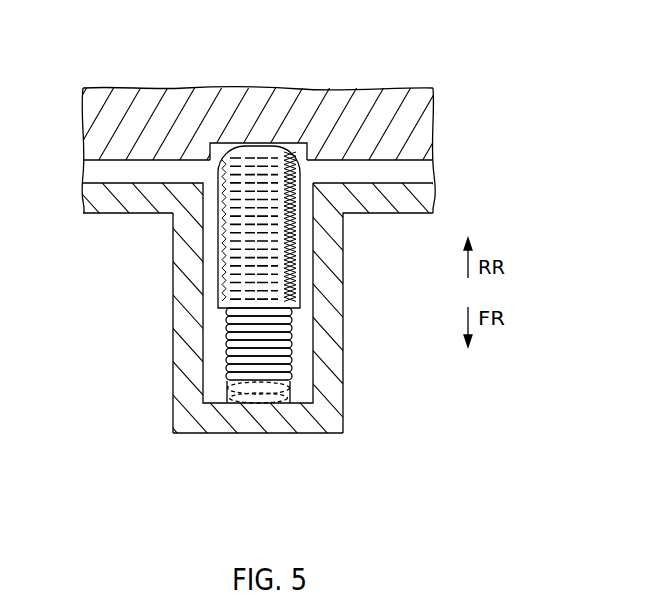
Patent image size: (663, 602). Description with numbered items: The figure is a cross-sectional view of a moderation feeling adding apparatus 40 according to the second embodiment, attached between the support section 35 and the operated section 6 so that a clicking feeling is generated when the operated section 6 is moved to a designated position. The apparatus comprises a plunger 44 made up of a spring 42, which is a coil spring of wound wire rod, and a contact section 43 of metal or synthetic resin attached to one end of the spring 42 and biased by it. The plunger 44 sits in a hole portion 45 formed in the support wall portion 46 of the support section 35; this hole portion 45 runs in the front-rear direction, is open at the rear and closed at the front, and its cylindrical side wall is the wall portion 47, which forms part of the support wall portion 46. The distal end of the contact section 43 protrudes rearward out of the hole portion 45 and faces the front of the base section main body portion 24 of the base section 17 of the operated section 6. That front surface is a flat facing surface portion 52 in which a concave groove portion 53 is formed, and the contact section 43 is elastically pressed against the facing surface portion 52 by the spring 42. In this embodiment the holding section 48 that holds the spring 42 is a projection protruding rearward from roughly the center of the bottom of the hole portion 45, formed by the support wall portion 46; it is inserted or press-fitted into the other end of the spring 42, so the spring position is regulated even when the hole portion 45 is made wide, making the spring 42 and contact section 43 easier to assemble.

The operated section 6 is at (365, 89).
The base section 17 is at (133, 93).
The base section main body portion 24 is at (92, 124).
The support section 35 is at (90, 201).
The moderation feeling adding apparatus 40 is at (437, 112).
The spring 42 is at (258, 380).
The contact section 43 is at (253, 150).
The plunger 44 is at (226, 152).
The hole portion 45 is at (216, 306).
The support wall portion 46 is at (344, 430).
The wall portion 47 is at (178, 238).
The holding section 48 is at (232, 396).
The facing surface portion 52 is at (432, 166).
The concave groove portion 53 is at (303, 150).